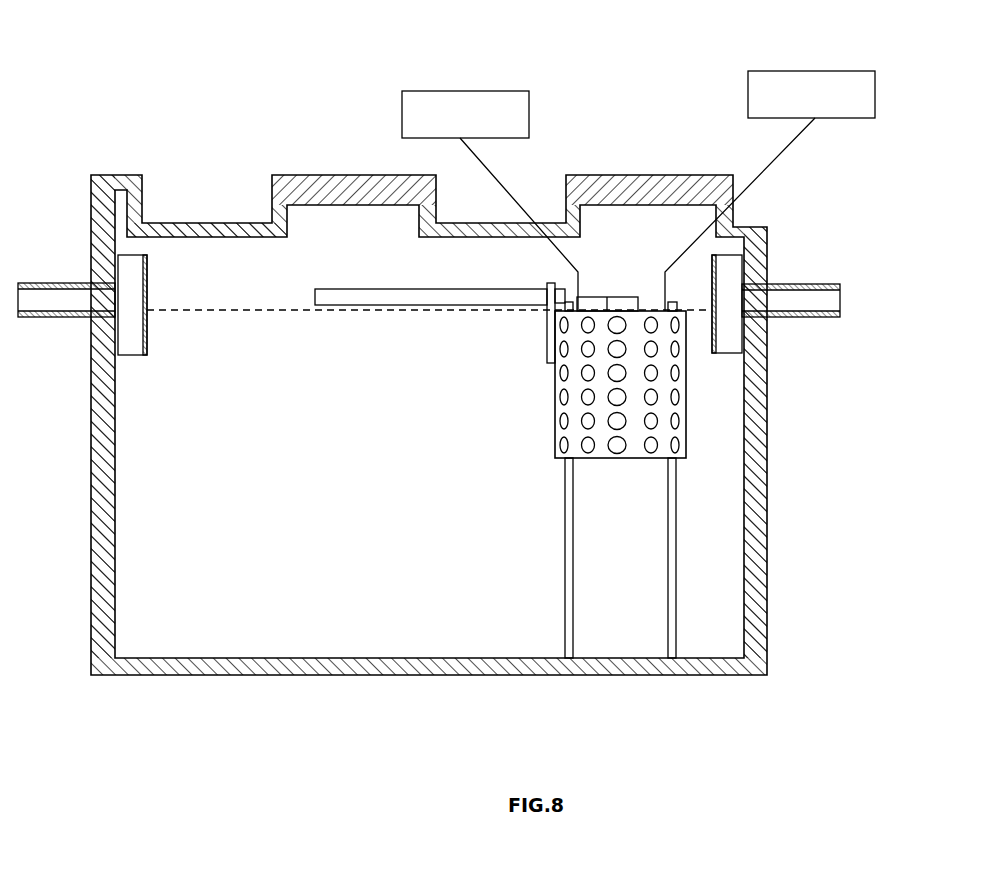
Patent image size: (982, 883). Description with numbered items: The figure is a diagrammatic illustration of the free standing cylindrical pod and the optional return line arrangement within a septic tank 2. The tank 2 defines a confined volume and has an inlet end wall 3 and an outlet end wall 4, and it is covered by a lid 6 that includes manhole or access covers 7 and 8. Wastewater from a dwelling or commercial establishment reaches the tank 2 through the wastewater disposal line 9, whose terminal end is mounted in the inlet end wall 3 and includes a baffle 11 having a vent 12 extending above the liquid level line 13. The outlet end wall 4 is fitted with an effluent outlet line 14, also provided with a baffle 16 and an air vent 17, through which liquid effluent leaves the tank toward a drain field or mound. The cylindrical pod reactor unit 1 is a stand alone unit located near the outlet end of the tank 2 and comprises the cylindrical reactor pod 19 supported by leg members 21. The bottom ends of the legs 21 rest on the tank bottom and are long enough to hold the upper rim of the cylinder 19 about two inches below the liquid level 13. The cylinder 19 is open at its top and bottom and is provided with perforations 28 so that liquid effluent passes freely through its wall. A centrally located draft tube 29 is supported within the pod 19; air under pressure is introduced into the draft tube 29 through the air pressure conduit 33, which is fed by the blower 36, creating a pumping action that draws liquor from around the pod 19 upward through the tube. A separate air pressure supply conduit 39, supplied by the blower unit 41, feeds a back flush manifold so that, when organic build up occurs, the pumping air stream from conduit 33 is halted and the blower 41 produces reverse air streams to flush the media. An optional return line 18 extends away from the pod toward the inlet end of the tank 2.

The cylindrical pod reactor unit 1 is at (583, 373).
The septic tank 2 is at (432, 427).
The inlet end wall 3 is at (91, 522).
The outlet end wall 4 is at (767, 545).
The lid 6 is at (198, 223).
The access cover 7 is at (328, 175).
The access cover 8 is at (641, 175).
The wastewater disposal line 9 is at (43, 283).
The baffle 11 is at (135, 343).
The vent 12 is at (167, 312).
The liquid level line 13 is at (270, 312).
The effluent outlet line 14 is at (838, 318).
The baffle 16 is at (712, 345).
The air vent 17 is at (769, 326).
The return line 18 is at (366, 289).
The cylindrical reactor pod 19 is at (633, 458).
The leg members 21 is at (565, 520).
The perforations 28 is at (562, 445).
The draft tube 29 is at (620, 297).
The air pressure conduit 33 is at (500, 183).
The blower 36 is at (477, 100).
The air pressure supply conduit 39 is at (768, 166).
The blower unit 41 is at (805, 72).